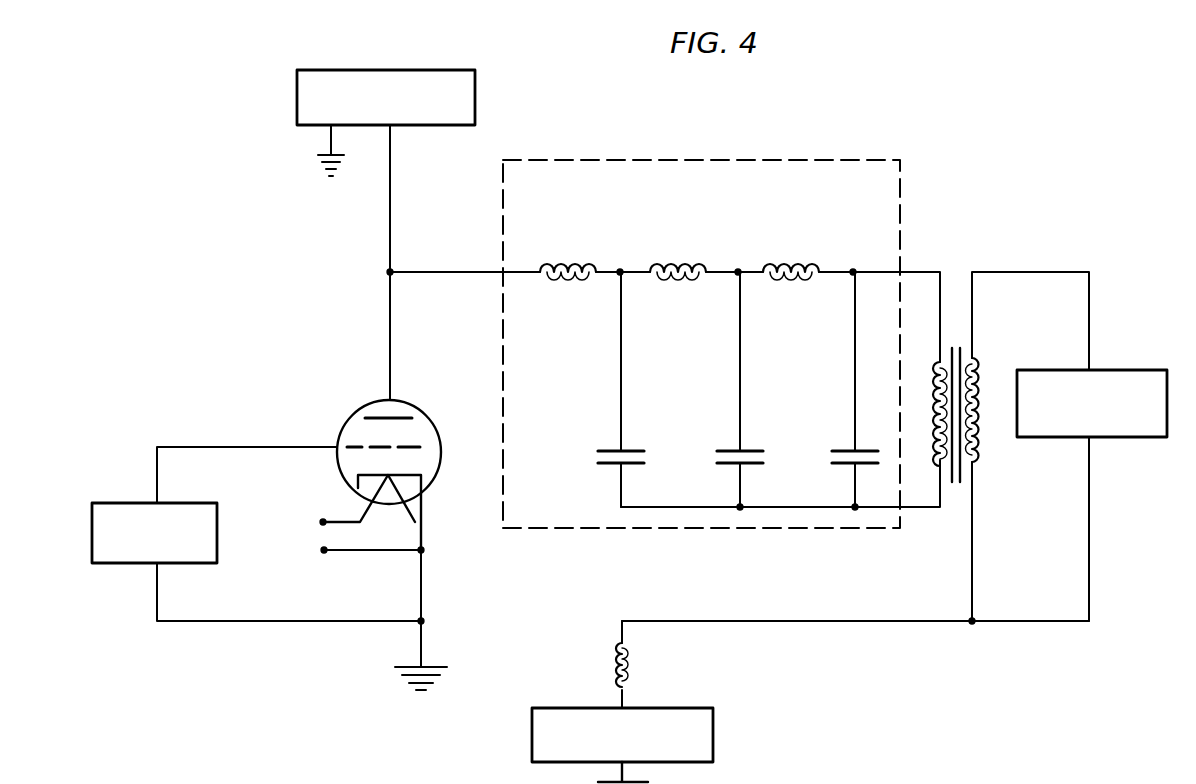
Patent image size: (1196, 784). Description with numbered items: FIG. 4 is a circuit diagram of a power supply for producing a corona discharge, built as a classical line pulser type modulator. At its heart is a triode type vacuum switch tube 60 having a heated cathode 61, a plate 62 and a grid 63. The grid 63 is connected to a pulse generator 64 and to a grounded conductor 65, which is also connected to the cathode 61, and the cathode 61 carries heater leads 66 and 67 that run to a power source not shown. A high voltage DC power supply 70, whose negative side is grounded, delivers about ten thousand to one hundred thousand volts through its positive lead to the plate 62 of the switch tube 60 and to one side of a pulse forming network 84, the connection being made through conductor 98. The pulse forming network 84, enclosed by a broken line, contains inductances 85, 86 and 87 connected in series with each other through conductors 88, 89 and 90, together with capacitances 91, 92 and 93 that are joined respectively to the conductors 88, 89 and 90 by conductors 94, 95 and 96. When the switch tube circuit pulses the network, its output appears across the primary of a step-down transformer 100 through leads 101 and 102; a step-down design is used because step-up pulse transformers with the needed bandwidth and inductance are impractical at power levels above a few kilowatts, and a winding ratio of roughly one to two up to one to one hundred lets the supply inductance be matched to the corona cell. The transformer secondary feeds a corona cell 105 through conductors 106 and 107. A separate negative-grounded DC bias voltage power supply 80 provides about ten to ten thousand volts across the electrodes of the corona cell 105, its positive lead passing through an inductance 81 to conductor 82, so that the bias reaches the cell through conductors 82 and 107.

The vacuum switch tube 60 is at (358, 410).
The heated cathode 61 is at (421, 497).
The plate 62 is at (390, 363).
The grid 63 is at (255, 448).
The pulse generator 64 is at (122, 563).
The grounded conductor 65 is at (262, 621).
The heater lead 66 is at (326, 525).
The heater lead 67 is at (347, 553).
The high voltage DC power supply 70 is at (462, 70).
The DC bias voltage power supply 80 is at (713, 722).
The inductance 81 is at (633, 668).
The conductor 82 is at (915, 622).
The pulse forming network 84 is at (900, 202).
The inductance 85 is at (568, 268).
The inductance 86 is at (680, 268).
The inductance 87 is at (790, 268).
The conductor 88 is at (601, 275).
The conductor 89 is at (725, 275).
The conductor 90 is at (838, 275).
The capacitance 91 is at (635, 449).
The capacitance 92 is at (752, 449).
The capacitance 93 is at (860, 449).
The conductor 94 is at (621, 385).
The conductor 95 is at (740, 370).
The conductor 96 is at (855, 365).
The conductor 98 is at (427, 272).
The step-down transformer 100 is at (958, 350).
The lead 101 is at (912, 268).
The lead 102 is at (925, 510).
The corona cell 105 is at (1135, 368).
The conductor 106 is at (1060, 270).
The conductor 107 is at (1089, 547).